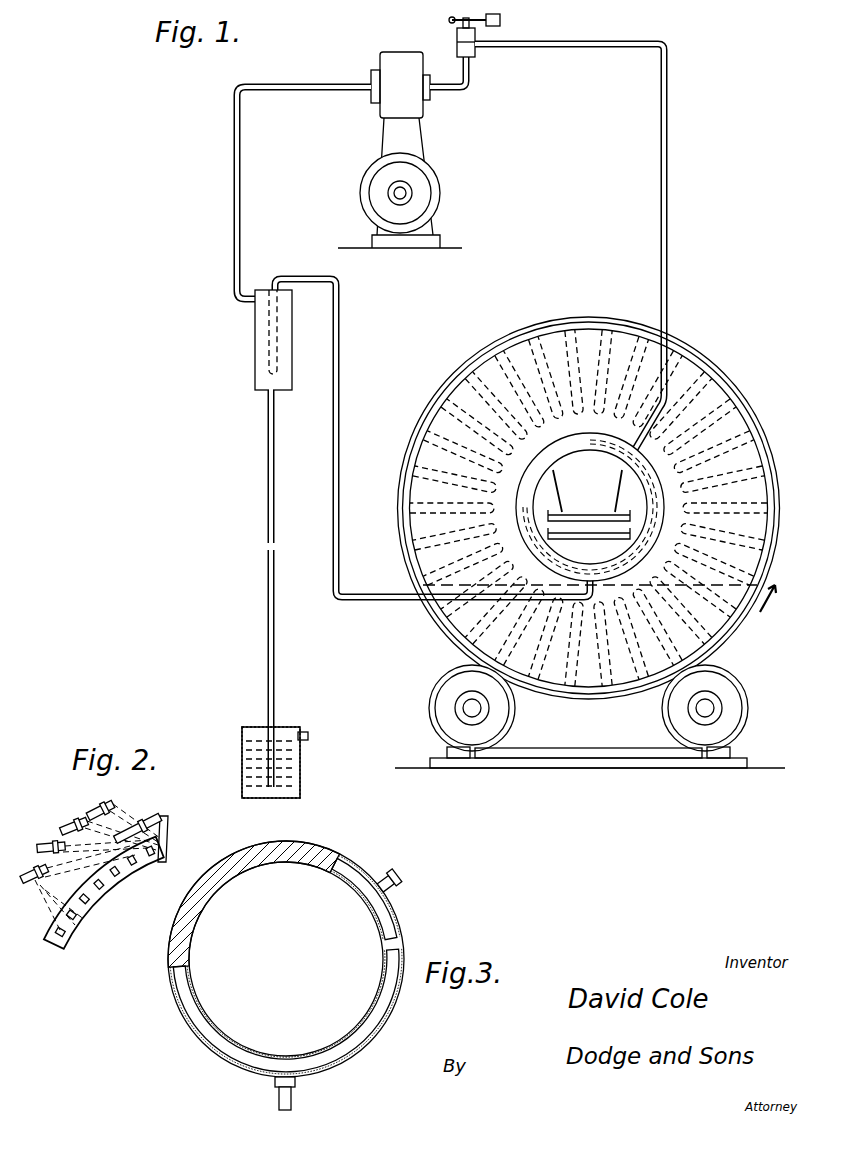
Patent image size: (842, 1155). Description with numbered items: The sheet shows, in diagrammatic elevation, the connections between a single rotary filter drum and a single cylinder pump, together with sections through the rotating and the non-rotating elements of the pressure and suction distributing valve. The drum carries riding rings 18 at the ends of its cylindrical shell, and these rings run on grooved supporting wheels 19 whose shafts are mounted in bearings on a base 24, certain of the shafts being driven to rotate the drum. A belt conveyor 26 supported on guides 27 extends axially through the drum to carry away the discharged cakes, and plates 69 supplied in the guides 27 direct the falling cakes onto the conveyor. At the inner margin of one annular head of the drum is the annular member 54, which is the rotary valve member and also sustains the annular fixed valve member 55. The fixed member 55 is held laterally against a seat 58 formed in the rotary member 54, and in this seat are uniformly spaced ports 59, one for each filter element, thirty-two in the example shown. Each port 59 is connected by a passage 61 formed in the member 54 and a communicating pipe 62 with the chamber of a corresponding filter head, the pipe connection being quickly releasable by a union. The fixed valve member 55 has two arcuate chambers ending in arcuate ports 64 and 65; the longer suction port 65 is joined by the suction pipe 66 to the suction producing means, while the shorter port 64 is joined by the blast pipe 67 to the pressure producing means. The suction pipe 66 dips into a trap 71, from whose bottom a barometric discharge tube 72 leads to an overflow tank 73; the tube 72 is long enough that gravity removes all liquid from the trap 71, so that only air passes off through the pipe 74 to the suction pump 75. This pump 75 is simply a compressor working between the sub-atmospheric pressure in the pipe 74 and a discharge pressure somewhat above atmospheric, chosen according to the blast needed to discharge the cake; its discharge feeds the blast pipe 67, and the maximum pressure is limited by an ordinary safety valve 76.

In FIG. 1, the riding rings 18 is at (779, 544).
In FIG. 1, the grooved supporting wheels 19 is at (432, 703).
In FIG. 1, the base 24 is at (580, 748).
In FIG. 1, the belt conveyor 26 is at (583, 515).
In FIG. 1, the guides 27 is at (590, 535).
In FIG. 1, the annular member 54 is at (590, 507).
In FIG. 2, the annular member 54 is at (60, 848).
In FIG. 1, the fixed valve member 55 is at (553, 449).
In FIG. 3, the fixed valve member 55 is at (310, 848).
In FIG. 2, the seat 58 is at (75, 910).
In FIG. 2, the ports 59 is at (110, 868).
In FIG. 2, the passage 61 is at (167, 818).
In FIG. 2, the communicating pipe 62 is at (80, 815).
In FIG. 3, the arcuate port 64 is at (395, 918).
In FIG. 3, the suction port 65 is at (264, 1057).
In FIG. 1, the suction pipe 66 is at (340, 550).
In FIG. 3, the suction pipe 66 is at (292, 1098).
In FIG. 1, the blast pipe 67 is at (661, 218).
In FIG. 3, the blast pipe 67 is at (394, 877).
In FIG. 1, the plates 69 is at (612, 482).
In FIG. 1, the trap 71 is at (255, 352).
In FIG. 1, the barometric discharge tube 72 is at (267, 479).
In FIG. 1, the overflow tank 73 is at (301, 766).
In FIG. 1, the pipe 74 is at (243, 212).
In FIG. 1, the suction pump 75 is at (400, 150).
In FIG. 1, the safety valve 76 is at (456, 39).